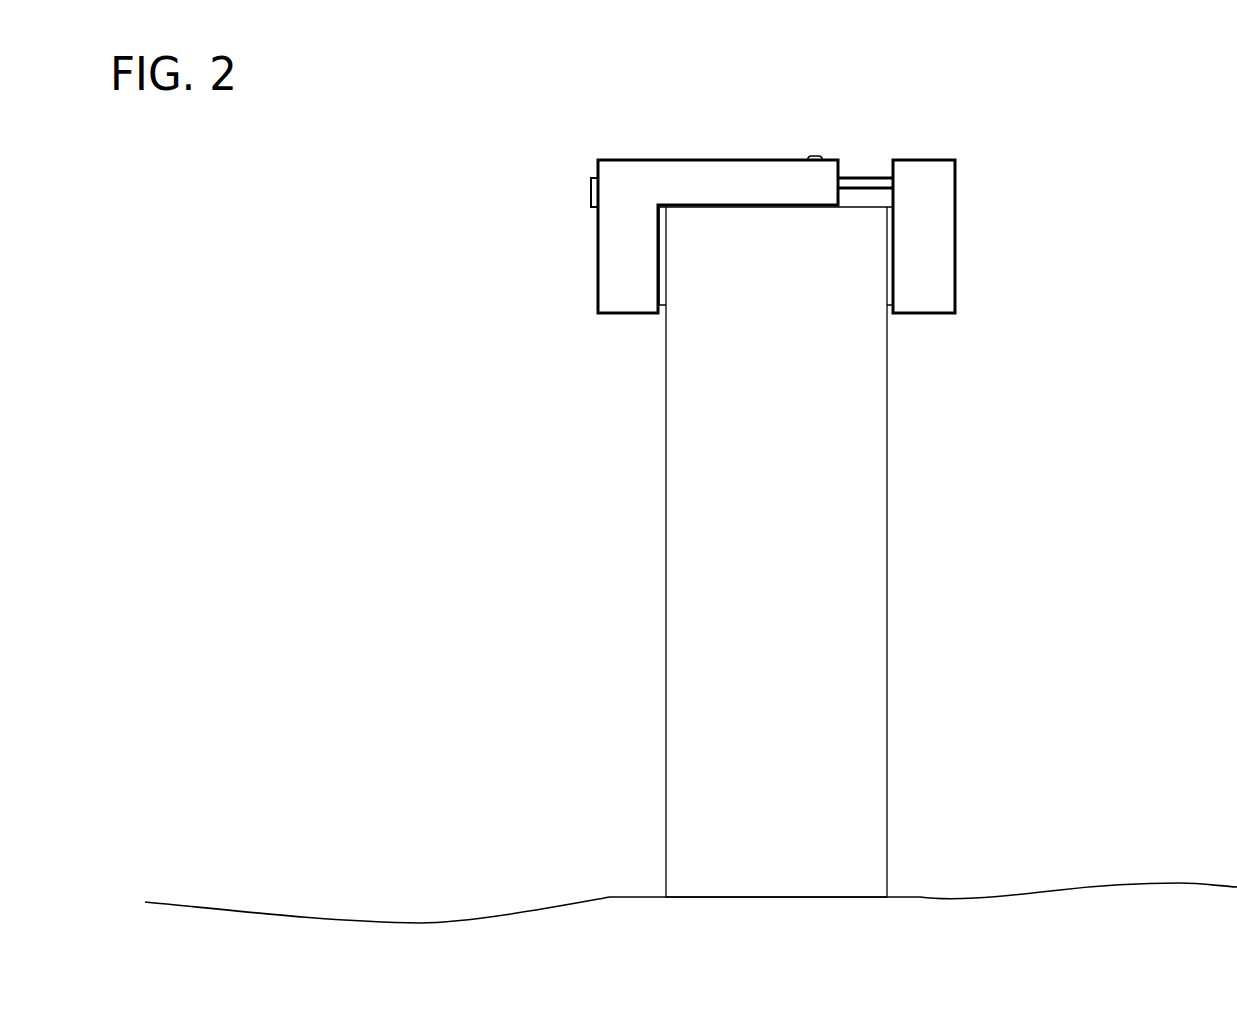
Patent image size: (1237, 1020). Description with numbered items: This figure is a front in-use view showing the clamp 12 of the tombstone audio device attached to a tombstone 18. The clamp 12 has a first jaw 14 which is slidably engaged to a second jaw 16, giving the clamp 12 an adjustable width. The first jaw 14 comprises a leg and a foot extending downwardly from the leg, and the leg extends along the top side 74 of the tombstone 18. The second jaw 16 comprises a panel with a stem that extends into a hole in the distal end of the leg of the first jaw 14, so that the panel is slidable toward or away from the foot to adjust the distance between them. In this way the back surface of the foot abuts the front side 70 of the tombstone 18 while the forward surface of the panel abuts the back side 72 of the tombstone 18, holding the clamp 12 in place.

The clamp 12 is at (796, 128).
The first jaw 14 is at (667, 154).
The second jaw 16 is at (973, 193).
The tombstone 18 is at (898, 553).
The front side 70 is at (667, 553).
The back side 72 is at (887, 482).
The top side 74 is at (857, 212).